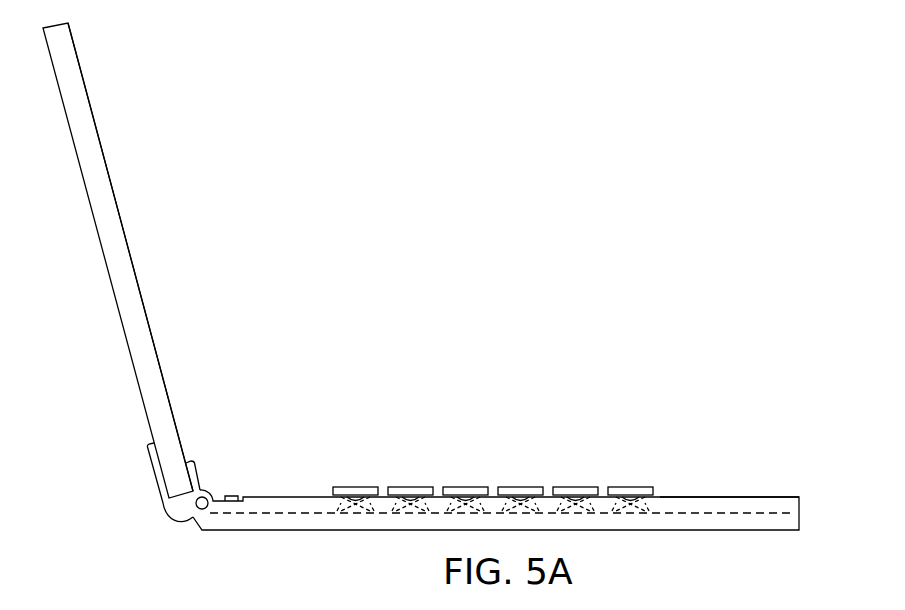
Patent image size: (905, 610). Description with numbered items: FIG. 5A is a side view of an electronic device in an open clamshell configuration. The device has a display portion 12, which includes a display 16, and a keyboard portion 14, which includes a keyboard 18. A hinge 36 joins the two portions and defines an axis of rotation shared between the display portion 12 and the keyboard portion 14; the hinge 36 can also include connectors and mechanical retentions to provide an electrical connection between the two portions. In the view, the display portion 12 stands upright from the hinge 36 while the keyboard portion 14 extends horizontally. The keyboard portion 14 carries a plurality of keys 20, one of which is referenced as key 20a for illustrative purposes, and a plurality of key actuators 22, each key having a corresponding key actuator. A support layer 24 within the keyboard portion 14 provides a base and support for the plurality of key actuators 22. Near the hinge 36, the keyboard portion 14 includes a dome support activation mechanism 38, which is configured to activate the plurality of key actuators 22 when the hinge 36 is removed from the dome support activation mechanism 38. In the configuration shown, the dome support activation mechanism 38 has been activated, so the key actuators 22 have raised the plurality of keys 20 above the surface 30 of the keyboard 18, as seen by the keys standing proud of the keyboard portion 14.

The display portion 12 is at (105, 266).
The keyboard portion 14 is at (688, 496).
The display 16 is at (128, 200).
The keyboard 18 is at (496, 484).
The plurality of keys 20 is at (467, 487).
The key 20a is at (355, 487).
The plurality of key actuators 22 is at (351, 519).
The support layer 24 is at (715, 514).
The surface 30 is at (760, 497).
The hinge 36 is at (154, 476).
The dome support activation mechanism 38 is at (230, 496).